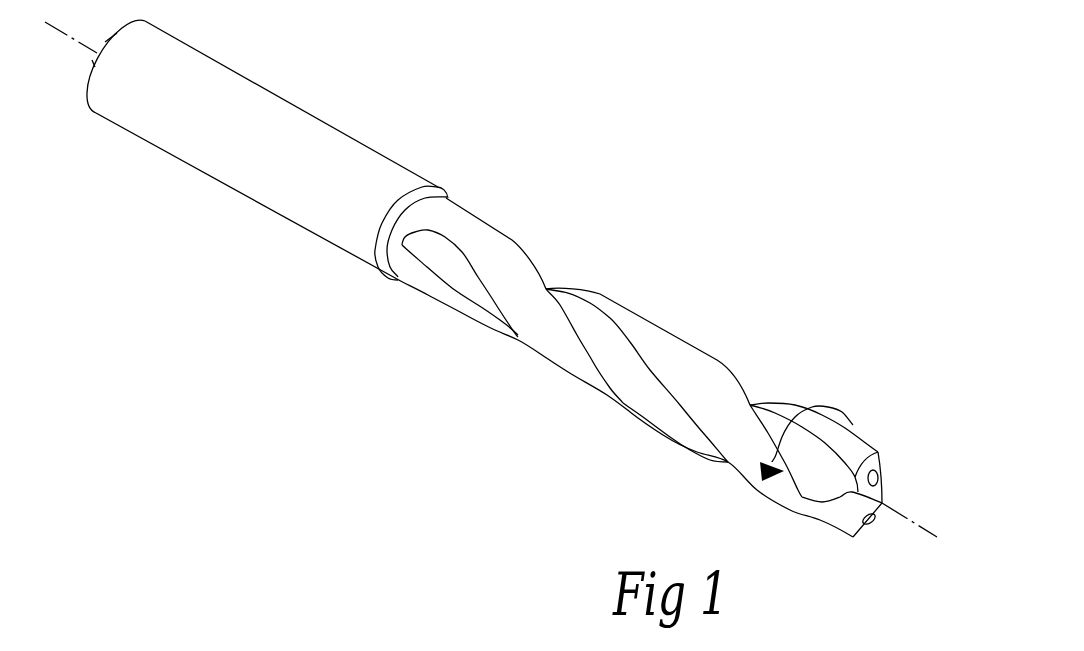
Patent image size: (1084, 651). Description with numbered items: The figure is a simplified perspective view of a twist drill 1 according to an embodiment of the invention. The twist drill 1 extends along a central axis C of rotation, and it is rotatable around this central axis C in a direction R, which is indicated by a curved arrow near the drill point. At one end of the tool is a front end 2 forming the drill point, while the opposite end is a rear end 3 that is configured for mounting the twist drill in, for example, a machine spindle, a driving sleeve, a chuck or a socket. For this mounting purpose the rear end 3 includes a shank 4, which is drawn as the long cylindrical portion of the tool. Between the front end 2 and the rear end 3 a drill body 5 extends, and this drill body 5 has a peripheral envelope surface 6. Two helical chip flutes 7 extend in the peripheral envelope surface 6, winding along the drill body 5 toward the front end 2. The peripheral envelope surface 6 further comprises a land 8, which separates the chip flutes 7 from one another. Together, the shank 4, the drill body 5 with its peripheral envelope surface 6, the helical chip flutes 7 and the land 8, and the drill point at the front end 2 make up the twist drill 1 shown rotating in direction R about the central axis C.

The twist drill 1 is at (499, 165).
The front end 2 is at (865, 532).
The rear end 3 is at (92, 70).
The shank 4 is at (206, 158).
The drill body 5 is at (673, 333).
The peripheral envelope surface 6 is at (713, 394).
The helical chip flutes 7 is at (637, 377).
The land 8 is at (748, 453).
The direction of rotation R is at (806, 428).
The central axis C is at (919, 531).